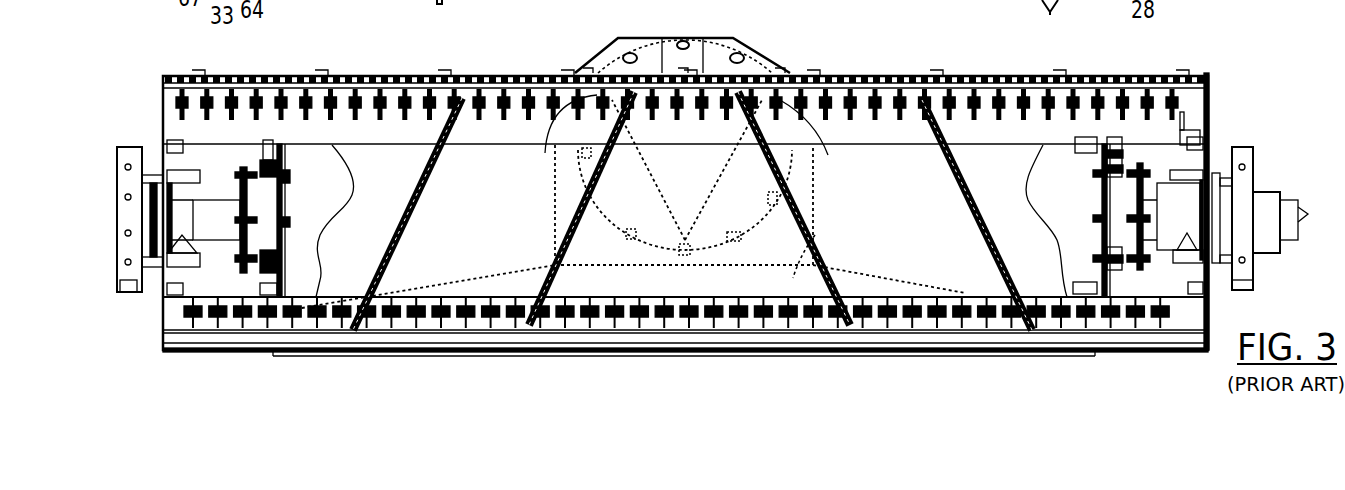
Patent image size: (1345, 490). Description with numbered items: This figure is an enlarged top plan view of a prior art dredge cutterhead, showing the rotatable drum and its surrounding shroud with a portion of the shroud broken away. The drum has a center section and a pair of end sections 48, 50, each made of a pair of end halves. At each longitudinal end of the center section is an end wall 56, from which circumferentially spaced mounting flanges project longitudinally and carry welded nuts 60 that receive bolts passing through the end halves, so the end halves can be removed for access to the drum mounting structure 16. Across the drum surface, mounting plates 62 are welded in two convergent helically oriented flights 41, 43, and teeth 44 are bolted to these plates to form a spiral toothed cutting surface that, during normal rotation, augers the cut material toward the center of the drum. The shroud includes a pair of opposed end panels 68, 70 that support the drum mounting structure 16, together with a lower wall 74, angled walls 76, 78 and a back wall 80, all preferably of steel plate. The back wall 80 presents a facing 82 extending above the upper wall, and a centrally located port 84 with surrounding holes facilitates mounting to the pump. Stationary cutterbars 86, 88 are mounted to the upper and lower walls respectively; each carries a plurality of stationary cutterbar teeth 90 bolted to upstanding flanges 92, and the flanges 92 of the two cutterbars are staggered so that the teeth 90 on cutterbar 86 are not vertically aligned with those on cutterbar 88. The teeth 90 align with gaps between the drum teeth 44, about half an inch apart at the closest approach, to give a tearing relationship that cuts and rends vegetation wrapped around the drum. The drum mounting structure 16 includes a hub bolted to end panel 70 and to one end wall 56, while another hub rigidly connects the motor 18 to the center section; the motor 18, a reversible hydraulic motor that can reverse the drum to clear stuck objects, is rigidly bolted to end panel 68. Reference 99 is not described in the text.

The end panel 70 is at (160, 106).
The end section 50 is at (216, 138).
The drum mounting structure 16 is at (226, 202).
The end wall 56 is at (284, 201).
The nut 60 is at (282, 239).
The mounting plate 62 is at (377, 267).
The tooth 44 is at (416, 208).
The helically oriented flight 43 is at (560, 267).
The helically oriented flight 41 is at (820, 267).
The stationary cutterbar tooth 90 is at (327, 113).
The upstanding flange 92 is at (383, 115).
The port 84 is at (683, 140).
The stationary cutterbar 86 is at (529, 74).
The facing 82 is at (762, 44).
The rotary path 99 is at (685, 145).
The lower wall 74 is at (815, 230).
The angled wall 76 is at (654, 205).
The angled wall 78 is at (627, 258).
The back wall 80 is at (686, 181).
The stationary cutterbar 88 is at (725, 297).
The end section 48 is at (1212, 93).
The end panel 68 is at (1190, 125).
The motor 18 is at (1293, 258).